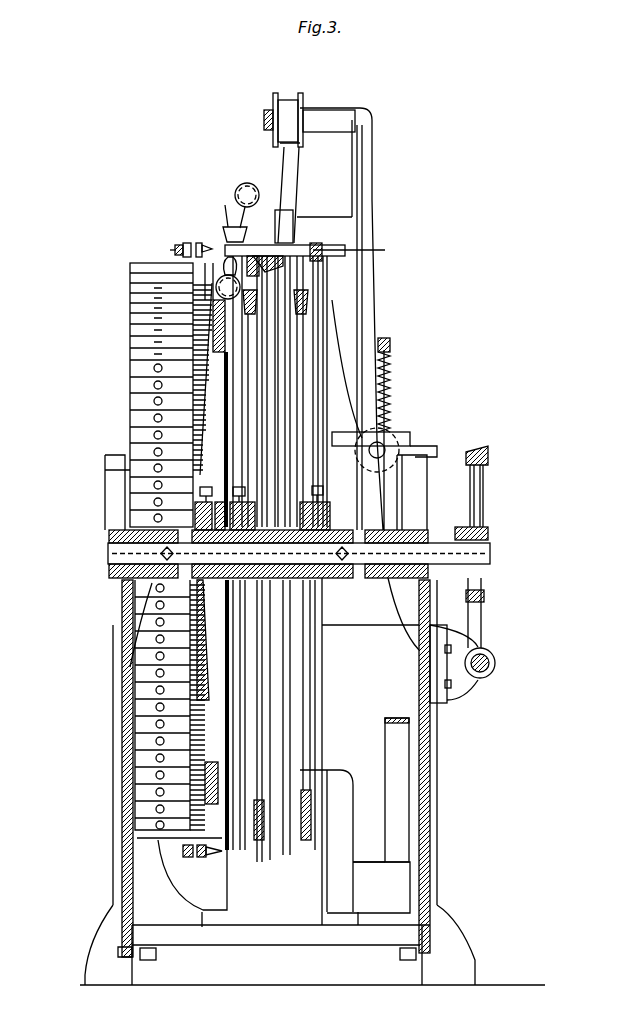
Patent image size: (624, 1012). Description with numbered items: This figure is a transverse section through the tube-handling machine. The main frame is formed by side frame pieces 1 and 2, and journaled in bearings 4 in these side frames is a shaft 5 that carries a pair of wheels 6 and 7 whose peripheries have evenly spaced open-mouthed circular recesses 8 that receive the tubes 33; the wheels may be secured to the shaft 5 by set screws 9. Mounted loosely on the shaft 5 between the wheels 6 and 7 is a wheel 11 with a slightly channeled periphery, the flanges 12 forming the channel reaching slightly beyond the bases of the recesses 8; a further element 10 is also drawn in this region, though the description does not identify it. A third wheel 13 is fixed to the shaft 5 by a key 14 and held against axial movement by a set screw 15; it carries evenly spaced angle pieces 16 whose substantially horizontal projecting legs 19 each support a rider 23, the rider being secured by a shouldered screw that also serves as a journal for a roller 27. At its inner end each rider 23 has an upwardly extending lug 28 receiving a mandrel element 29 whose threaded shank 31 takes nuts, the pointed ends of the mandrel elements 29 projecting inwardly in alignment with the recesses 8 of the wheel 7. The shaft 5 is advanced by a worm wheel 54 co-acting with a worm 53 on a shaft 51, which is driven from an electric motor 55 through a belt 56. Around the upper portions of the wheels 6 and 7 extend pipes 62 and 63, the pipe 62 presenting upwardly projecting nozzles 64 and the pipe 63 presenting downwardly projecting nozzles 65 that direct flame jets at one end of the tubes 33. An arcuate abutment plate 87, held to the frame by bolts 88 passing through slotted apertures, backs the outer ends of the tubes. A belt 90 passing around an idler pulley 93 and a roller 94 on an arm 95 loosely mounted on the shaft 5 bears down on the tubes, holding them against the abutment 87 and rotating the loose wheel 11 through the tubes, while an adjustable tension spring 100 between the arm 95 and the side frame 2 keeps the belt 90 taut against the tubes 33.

The side frame piece 1 is at (118, 617).
The side frame piece 2 is at (430, 608).
The bearing 4 is at (120, 527).
The shaft 5 is at (112, 563).
The wheel 6 is at (310, 298).
The wheel 7 is at (256, 303).
The circular recess 8 is at (322, 258).
The set screw 9 is at (240, 487).
The bracket 10 is at (265, 276).
The wheel 11 is at (283, 268).
The flange 12 is at (280, 243).
The third wheel 13 is at (212, 577).
The key 14 is at (213, 560).
The set screw 15 is at (228, 328).
The angle piece 16 is at (205, 790).
The projecting leg 19 is at (200, 823).
The rider 23 is at (143, 262).
The roller 27 is at (157, 340).
The lug 28 is at (180, 248).
The mandrel element 29 is at (197, 243).
The shank 31 is at (162, 252).
The tube 33 is at (256, 245).
The shaft 51 is at (497, 678).
The worm 53 is at (497, 663).
The worm wheel 54 is at (488, 452).
The electric motor 55 is at (342, 770).
The belt 56 is at (394, 718).
The pipe 62 is at (228, 287).
The pipe 63 is at (249, 183).
The nozzle 64 is at (224, 257).
The nozzle 65 is at (224, 212).
The arcuate abutment plate 87 is at (362, 432).
The bolt 88 is at (368, 440).
The belt 90 is at (287, 93).
The idler pulley 93 is at (305, 110).
The roller 94 is at (286, 220).
The arm 95 is at (368, 160).
The tension spring 100 is at (392, 372).